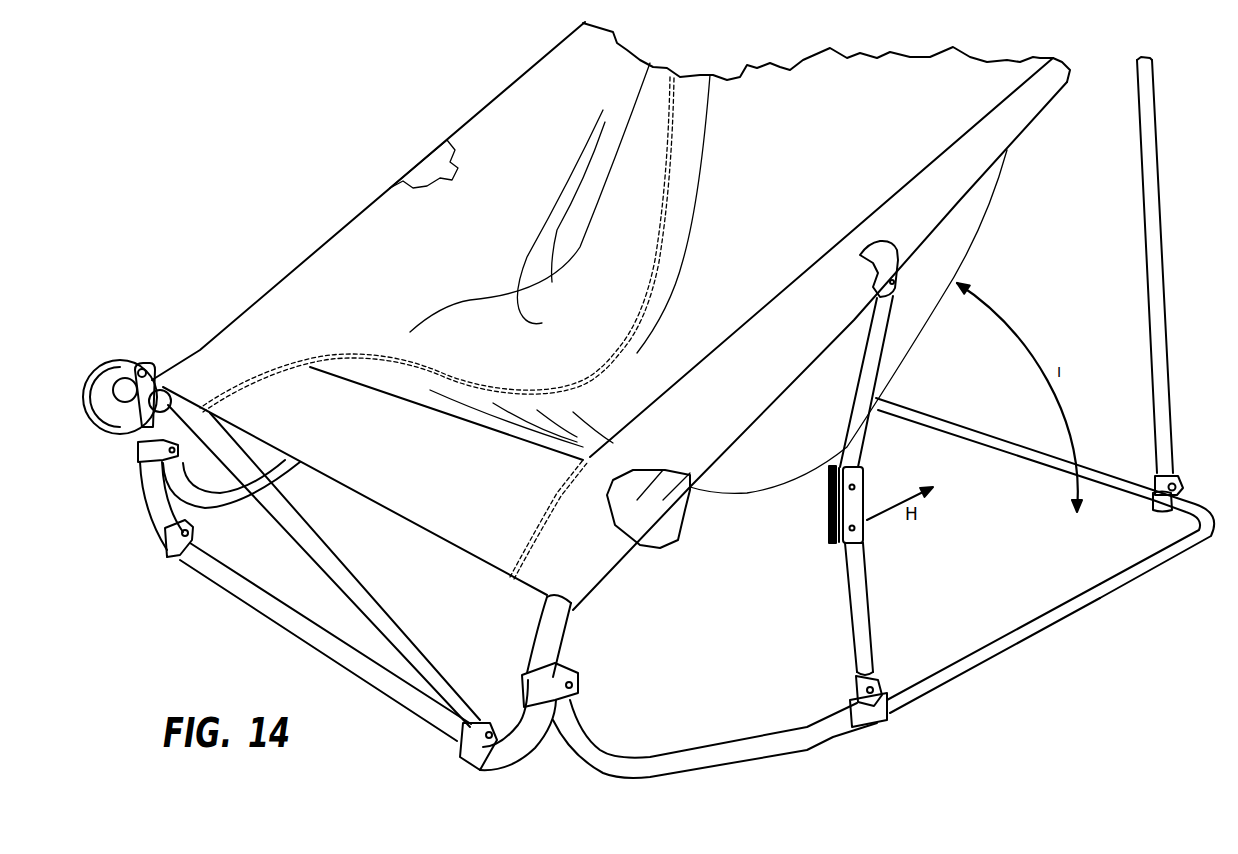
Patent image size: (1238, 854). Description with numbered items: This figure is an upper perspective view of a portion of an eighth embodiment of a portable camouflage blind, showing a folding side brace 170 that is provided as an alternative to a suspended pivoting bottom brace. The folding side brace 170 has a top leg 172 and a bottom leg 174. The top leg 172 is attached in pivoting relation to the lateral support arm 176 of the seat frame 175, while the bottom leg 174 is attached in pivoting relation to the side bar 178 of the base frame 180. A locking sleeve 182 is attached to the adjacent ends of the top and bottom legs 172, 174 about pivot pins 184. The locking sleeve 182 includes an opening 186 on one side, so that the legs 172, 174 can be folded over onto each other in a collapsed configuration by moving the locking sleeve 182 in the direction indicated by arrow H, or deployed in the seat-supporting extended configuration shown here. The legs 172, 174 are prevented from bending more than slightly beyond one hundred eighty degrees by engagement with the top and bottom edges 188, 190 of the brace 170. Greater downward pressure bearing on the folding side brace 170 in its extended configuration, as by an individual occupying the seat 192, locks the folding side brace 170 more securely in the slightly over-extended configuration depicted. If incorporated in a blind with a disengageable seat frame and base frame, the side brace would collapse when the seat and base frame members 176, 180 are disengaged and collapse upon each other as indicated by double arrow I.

The folding side brace 170 is at (815, 580).
The top leg 172 is at (880, 330).
The bottom leg 174 is at (865, 655).
The seat frame 175 is at (570, 640).
The lateral support arm 176 is at (655, 510).
The side bar 178 is at (1020, 627).
The base frame 180 is at (1140, 553).
The locking sleeve 182 is at (866, 537).
The pivot pins 184 is at (858, 488).
The opening 186 is at (830, 506).
The top edge 188 is at (858, 462).
The bottom edge 190 is at (862, 560).
The seat 192 is at (764, 267).